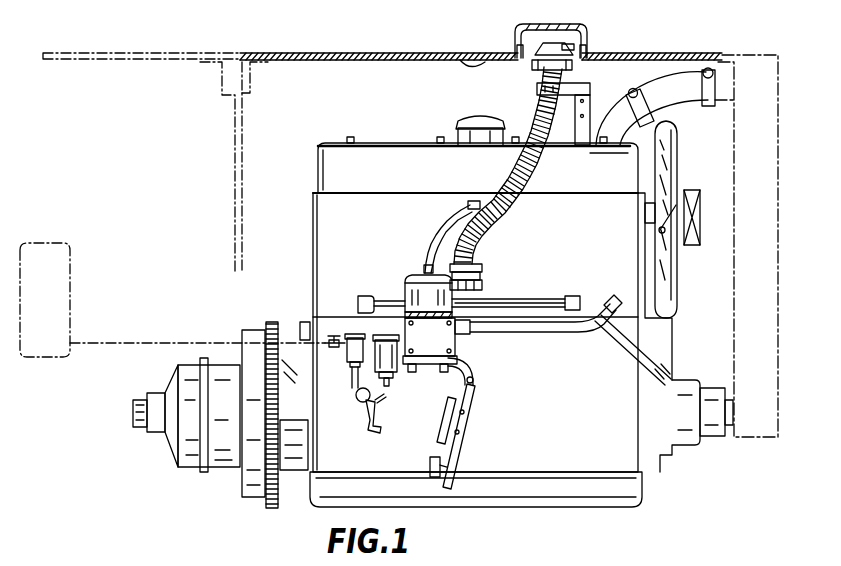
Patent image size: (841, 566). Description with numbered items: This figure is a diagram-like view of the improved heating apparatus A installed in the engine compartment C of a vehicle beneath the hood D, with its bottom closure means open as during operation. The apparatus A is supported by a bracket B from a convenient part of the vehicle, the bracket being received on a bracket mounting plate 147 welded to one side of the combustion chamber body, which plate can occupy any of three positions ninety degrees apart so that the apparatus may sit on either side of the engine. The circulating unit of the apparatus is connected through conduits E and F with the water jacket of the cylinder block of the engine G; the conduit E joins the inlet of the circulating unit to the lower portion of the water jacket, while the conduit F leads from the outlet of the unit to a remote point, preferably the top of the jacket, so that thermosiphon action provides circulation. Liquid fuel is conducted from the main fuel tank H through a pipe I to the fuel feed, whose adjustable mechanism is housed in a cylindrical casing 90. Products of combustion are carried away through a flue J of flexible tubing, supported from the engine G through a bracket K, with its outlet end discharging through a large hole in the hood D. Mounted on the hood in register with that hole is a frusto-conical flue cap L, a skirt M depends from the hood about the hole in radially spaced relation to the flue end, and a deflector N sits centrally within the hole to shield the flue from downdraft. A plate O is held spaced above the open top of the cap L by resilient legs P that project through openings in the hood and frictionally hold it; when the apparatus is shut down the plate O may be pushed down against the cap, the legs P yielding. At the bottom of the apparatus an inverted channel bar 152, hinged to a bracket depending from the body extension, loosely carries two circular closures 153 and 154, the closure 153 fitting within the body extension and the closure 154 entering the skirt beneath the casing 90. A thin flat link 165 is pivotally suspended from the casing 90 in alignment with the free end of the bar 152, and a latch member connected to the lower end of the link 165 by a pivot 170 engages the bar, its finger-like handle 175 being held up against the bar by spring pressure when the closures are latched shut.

The heating apparatus A is at (407, 287).
The bracket B is at (400, 307).
The engine compartment C is at (297, 65).
The hood D is at (637, 58).
The conduit E is at (530, 336).
The conduit F is at (437, 230).
The engine G is at (330, 230).
The main fuel tank H is at (58, 292).
The pipe I is at (292, 340).
The flue J is at (522, 168).
The bracket K is at (590, 98).
The flue cap L is at (570, 43).
The skirt M is at (530, 66).
The deflector N is at (545, 53).
The plate O is at (551, 25).
The legs P is at (517, 45).
The casing 90 is at (395, 347).
The bracket mounting plate 147 is at (457, 342).
The inverted channel bar 152 is at (472, 407).
The closure 153 is at (447, 422).
The closure 154 is at (432, 465).
The link 165 is at (360, 375).
The pivot 170 is at (358, 393).
The handle 175 is at (369, 430).